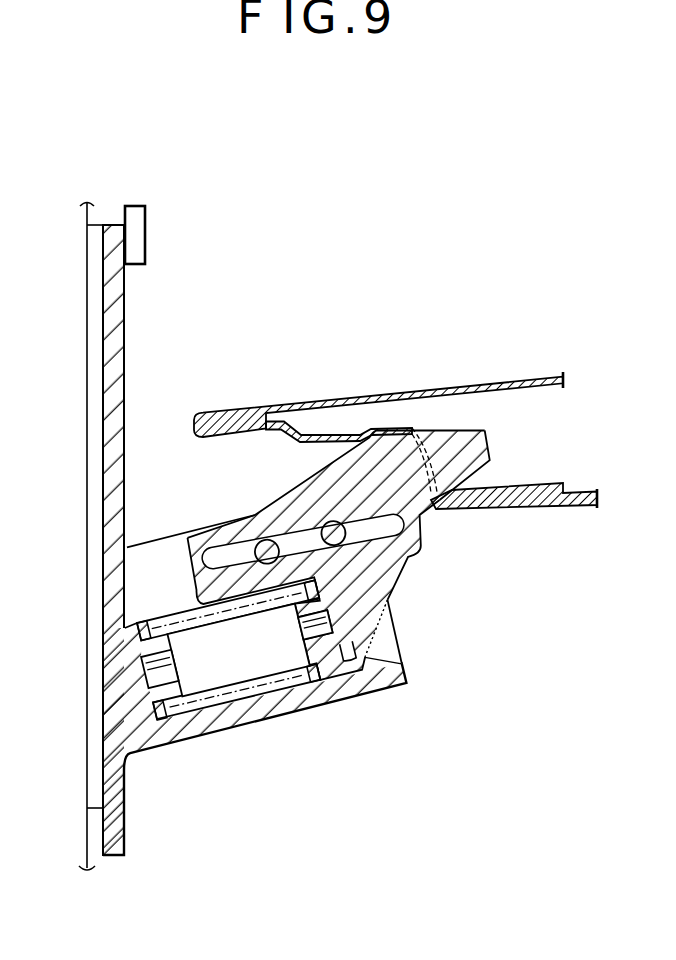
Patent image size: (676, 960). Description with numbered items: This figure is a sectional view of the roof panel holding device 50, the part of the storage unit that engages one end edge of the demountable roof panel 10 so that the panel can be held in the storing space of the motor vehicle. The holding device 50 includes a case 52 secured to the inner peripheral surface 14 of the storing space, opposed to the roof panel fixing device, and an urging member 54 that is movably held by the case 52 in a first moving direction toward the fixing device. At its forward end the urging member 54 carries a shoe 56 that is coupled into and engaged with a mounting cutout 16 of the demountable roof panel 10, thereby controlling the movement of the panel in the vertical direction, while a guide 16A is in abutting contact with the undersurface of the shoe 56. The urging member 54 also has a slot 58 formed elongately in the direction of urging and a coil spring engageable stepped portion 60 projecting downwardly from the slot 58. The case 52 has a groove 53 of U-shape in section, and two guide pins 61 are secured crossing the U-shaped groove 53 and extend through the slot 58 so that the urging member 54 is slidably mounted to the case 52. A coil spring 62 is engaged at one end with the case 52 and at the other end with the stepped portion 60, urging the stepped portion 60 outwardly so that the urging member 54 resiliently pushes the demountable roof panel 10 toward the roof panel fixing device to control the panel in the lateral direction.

The demountable roof panel 10 is at (458, 388).
The inner peripheral surface 14 is at (83, 848).
The mounting cutout 16 is at (393, 426).
The guide 16A is at (527, 490).
The roof panel holding device 50 is at (404, 707).
The case 52 is at (204, 739).
The groove 53 is at (404, 664).
The urging member 54 is at (417, 559).
The shoe 56 is at (480, 455).
The slot 58 is at (225, 550).
The coil spring engageable stepped portion 60 is at (340, 648).
The guide pins 61 is at (249, 546).
The coil spring 62 is at (312, 674).